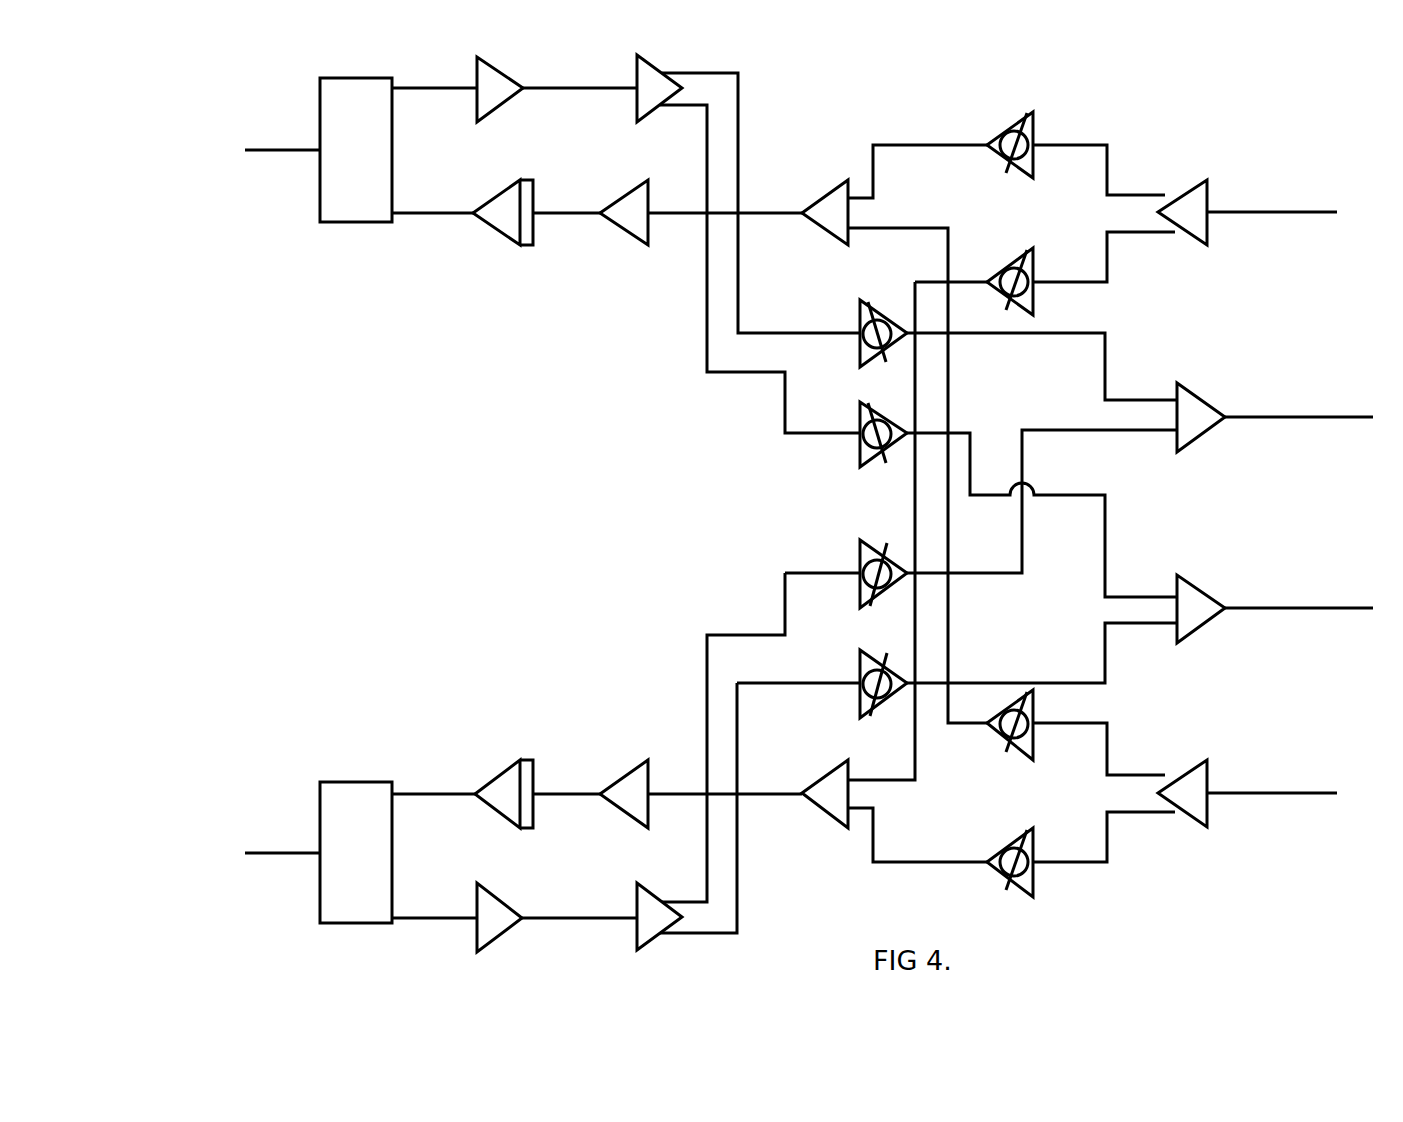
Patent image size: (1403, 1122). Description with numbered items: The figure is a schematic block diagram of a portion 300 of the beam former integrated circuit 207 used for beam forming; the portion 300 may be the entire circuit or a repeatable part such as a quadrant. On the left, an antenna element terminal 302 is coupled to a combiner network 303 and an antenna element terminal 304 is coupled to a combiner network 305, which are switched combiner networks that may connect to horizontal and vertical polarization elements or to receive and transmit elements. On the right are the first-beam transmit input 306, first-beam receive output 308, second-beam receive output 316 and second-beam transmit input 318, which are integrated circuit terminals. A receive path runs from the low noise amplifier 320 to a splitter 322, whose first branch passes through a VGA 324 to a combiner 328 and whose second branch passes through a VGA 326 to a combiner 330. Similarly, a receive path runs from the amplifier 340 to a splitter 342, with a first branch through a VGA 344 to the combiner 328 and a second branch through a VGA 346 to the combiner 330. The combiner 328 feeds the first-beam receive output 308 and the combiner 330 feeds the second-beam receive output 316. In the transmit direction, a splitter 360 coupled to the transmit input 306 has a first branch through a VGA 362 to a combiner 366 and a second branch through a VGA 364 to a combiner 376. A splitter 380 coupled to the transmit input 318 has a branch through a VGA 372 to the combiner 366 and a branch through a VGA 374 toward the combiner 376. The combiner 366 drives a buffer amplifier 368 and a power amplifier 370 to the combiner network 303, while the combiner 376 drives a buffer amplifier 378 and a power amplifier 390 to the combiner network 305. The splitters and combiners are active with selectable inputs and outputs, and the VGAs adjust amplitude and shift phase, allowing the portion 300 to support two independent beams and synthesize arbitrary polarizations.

The portion 300 is at (381, 356).
The integrated circuit 207 is at (471, 551).
The antenna element terminal 302 is at (255, 150).
The combiner network 303 is at (318, 207).
The low noise amplifier 320 is at (477, 118).
The splitter 322 is at (637, 117).
The power amplifier 370 is at (520, 232).
The amplifier 368 is at (648, 232).
The combiner 366 is at (840, 232).
The VGA 362 is at (1005, 157).
The VGA 364 is at (1010, 260).
The splitter 360 is at (1187, 237).
The beam 1 transmit input 306 is at (1257, 215).
The VGA 324 is at (860, 348).
The VGA 326 is at (860, 450).
The combiner 328 is at (1177, 440).
The beam 1 receive output 308 is at (1243, 418).
The VGA 344 is at (860, 583).
The VGA 346 is at (860, 692).
The combiner 330 is at (1177, 635).
The beam 2 receive output 316 is at (1243, 609).
The VGA 372 is at (1005, 735).
The VGA 374 is at (1005, 870).
The combiner 376 is at (840, 810).
The splitter 380 is at (1187, 817).
The beam 2 transmit input 318 is at (1257, 795).
The antenna element terminal 304 is at (255, 853).
The combiner network 305 is at (345, 923).
The power amplifier 390 is at (477, 797).
The amplifier 378 is at (605, 798).
The amplifier 340 is at (477, 920).
The splitter 342 is at (637, 933).